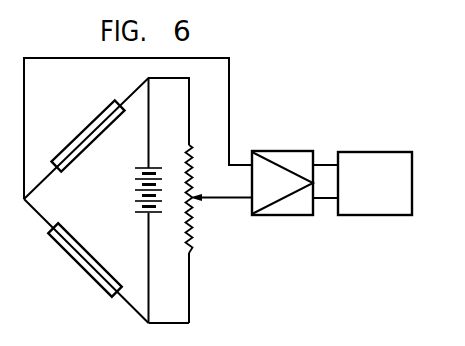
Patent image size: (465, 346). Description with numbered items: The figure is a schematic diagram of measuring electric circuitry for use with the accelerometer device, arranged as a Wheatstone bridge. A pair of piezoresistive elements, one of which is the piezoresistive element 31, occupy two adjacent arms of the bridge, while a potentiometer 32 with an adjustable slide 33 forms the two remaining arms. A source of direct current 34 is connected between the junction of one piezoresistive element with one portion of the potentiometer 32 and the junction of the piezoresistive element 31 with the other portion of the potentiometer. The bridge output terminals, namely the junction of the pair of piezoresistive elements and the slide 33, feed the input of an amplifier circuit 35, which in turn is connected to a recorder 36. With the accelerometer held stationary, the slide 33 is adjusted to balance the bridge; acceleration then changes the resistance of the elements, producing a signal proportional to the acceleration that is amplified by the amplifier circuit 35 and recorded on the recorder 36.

The piezoresistive element 31 is at (84, 262).
The potentiometer 32 is at (92, 131).
The adjustable slide 33 is at (202, 198).
The source of direct current 34 is at (135, 190).
The amplifier circuit 35 is at (283, 210).
The recorder 36 is at (375, 210).